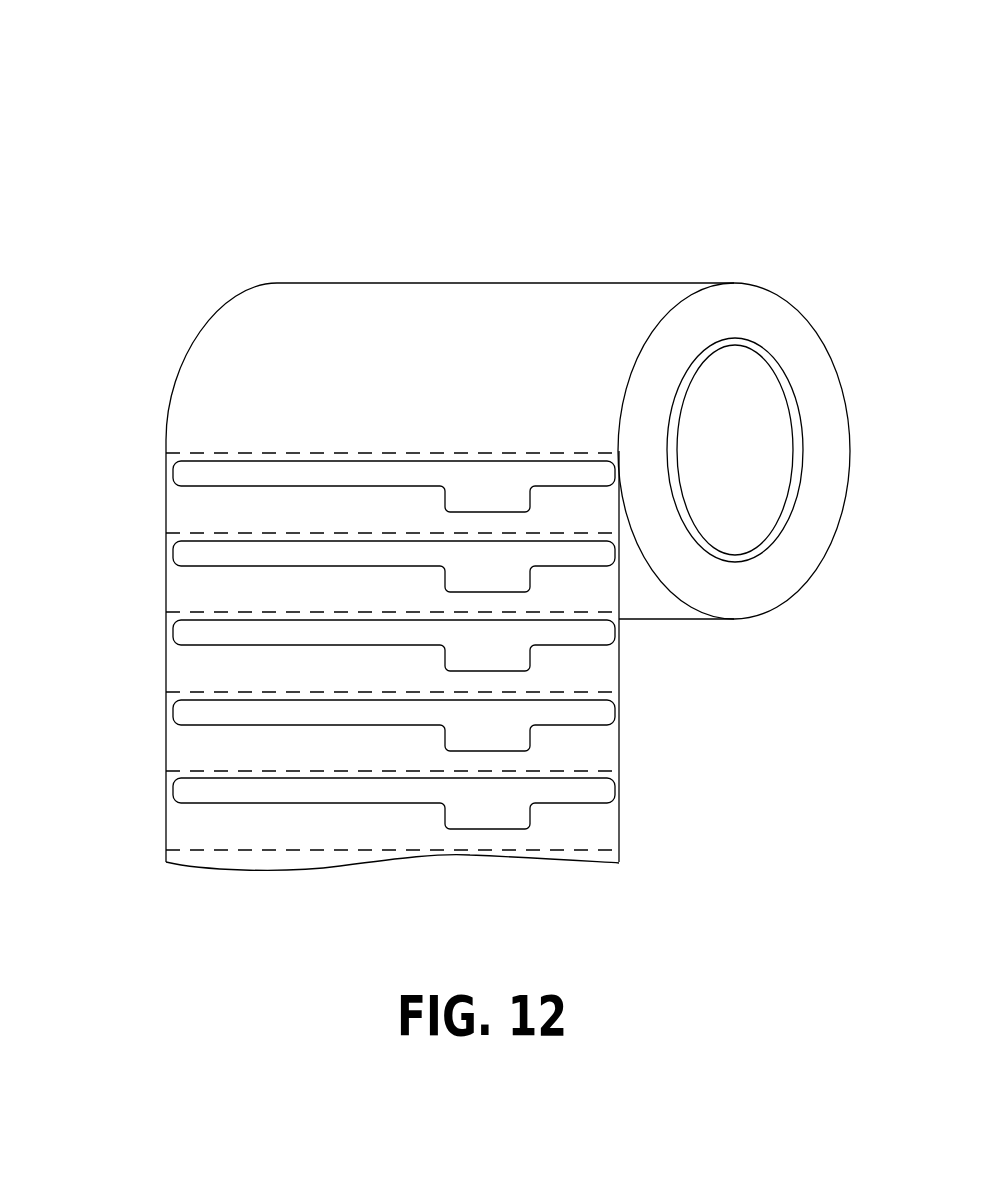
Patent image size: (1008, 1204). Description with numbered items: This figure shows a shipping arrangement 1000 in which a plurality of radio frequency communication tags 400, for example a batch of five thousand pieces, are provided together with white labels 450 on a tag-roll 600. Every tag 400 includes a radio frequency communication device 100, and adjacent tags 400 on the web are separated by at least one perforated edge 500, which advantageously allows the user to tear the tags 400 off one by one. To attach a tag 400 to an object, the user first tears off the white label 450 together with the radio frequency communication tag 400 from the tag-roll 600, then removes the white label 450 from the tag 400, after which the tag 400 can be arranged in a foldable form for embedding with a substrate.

The roll of labels 1000 is at (668, 133).
The tag-roll 600 is at (755, 445).
The radio frequency communication tag 400 is at (162, 562).
The white label 450 is at (205, 585).
The perforated edge 500 is at (190, 615).
The radio frequency communication device 100 is at (560, 557).